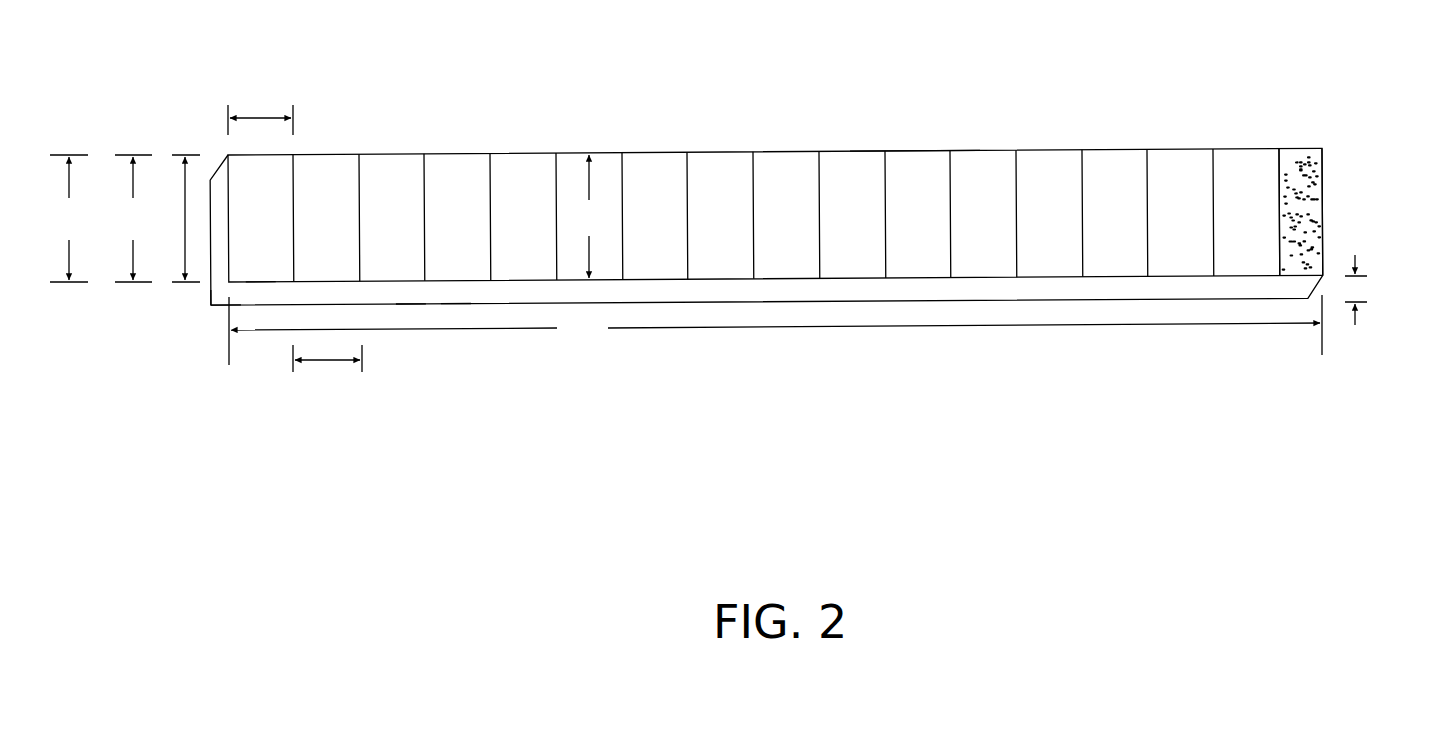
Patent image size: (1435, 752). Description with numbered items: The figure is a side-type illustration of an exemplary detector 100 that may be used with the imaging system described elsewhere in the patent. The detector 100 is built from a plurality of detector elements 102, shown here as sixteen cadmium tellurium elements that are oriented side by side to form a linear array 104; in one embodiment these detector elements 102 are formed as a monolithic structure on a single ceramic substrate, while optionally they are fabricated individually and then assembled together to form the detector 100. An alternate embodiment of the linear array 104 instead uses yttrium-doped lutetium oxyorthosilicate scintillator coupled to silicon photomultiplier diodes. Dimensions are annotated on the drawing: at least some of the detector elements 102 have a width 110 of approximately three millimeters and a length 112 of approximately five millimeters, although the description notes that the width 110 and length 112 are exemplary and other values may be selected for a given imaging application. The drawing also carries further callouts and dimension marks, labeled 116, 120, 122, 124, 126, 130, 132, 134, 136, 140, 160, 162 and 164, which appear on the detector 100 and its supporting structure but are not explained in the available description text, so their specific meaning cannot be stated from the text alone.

The detector 100 is at (1293, 75).
The detector elements 102 is at (965, 162).
The linear array 104 is at (1173, 90).
The width 110 is at (330, 360).
The length 112 is at (133, 218).
The cell height 116 is at (590, 216).
The bottom wall 120 is at (258, 284).
The cell width 122 is at (258, 118).
The overall height 124 is at (71, 218).
The end corner 126 is at (225, 284).
The end cap 130 is at (1030, 150).
The base plate 132 is at (976, 258).
The plate upper surface 134 is at (450, 306).
The plate lower surface 136 is at (408, 306).
The divider walls 140 is at (295, 193).
The plate offset 160 is at (1357, 290).
The end face 162 is at (182, 215).
The overall length 164 is at (775, 330).